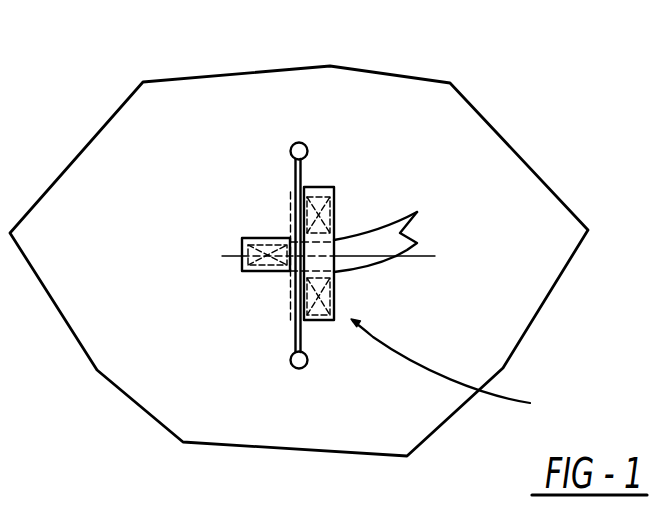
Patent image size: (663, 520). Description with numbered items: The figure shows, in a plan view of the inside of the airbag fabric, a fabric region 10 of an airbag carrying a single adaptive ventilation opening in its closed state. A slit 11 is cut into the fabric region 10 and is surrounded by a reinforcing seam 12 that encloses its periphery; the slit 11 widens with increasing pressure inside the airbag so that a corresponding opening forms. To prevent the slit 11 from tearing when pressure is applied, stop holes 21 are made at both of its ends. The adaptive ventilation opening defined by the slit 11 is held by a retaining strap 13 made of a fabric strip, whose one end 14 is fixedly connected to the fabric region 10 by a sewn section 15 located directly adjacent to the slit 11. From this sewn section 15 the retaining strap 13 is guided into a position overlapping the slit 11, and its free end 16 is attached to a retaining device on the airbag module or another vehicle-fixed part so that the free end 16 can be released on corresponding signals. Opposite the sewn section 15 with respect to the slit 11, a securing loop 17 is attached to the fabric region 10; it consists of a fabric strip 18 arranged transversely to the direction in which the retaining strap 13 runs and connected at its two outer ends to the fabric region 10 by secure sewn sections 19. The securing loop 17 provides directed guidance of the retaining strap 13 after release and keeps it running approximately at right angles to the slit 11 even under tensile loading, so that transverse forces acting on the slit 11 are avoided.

The fabric region 10 is at (508, 182).
The slit 11 is at (301, 173).
The reinforcing seam 12 is at (292, 328).
The retaining strap 13 is at (368, 265).
The end of the retaining strap 14 is at (257, 238).
The sewn section 15 is at (258, 272).
The free end of the retaining strap 16 is at (402, 233).
The securing loop 17 is at (454, 370).
The fabric strip 18 is at (334, 205).
The secure sewn sections 19 is at (323, 305).
The stop holes 21 is at (297, 143).